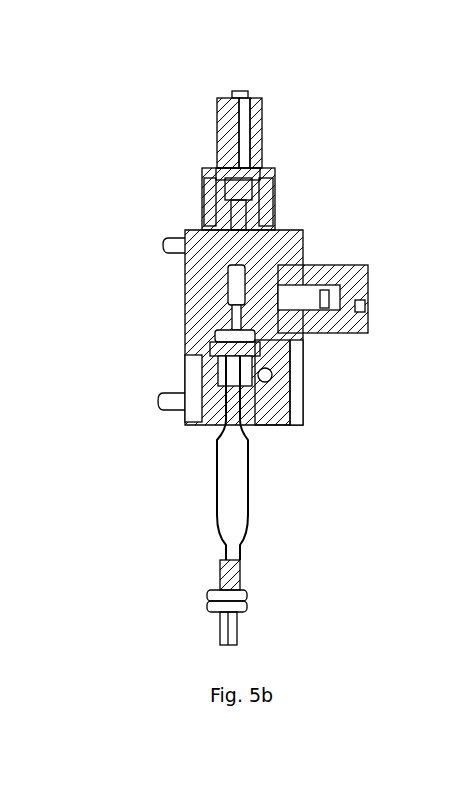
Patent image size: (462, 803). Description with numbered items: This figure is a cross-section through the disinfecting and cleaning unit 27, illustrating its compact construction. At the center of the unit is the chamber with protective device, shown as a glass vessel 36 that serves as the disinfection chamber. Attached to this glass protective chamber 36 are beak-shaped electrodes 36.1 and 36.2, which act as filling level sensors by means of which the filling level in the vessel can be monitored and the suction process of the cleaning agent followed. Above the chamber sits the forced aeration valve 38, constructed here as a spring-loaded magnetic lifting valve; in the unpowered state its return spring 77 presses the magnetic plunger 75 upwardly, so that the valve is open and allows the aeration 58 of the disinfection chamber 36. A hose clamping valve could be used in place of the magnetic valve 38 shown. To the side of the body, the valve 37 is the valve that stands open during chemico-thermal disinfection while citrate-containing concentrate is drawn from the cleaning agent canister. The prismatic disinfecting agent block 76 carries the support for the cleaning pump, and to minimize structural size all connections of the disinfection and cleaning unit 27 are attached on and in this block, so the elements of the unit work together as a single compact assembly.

The disinfecting and cleaning unit 27 is at (305, 168).
The magnetic plunger 75 is at (245, 96).
The prismatic disinfecting agent block 76 is at (218, 128).
The forced aeration valve 38 is at (263, 130).
The return spring 77 is at (258, 214).
The valve 37 is at (360, 270).
The aeration 58 is at (185, 280).
The beak-shaped electrode 36.2 is at (205, 345).
The glass protective chamber 36 is at (247, 492).
The beak-shaped electrode 36.1 is at (255, 608).